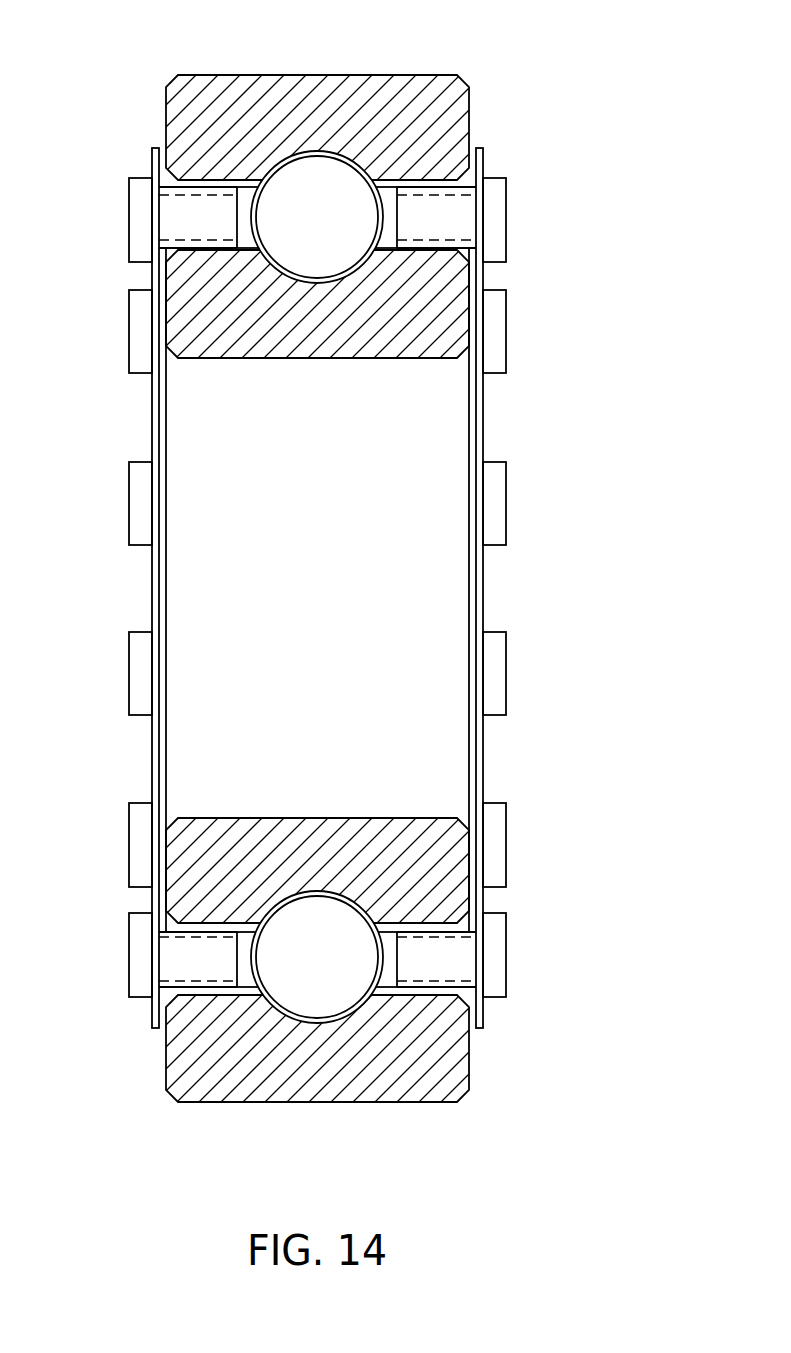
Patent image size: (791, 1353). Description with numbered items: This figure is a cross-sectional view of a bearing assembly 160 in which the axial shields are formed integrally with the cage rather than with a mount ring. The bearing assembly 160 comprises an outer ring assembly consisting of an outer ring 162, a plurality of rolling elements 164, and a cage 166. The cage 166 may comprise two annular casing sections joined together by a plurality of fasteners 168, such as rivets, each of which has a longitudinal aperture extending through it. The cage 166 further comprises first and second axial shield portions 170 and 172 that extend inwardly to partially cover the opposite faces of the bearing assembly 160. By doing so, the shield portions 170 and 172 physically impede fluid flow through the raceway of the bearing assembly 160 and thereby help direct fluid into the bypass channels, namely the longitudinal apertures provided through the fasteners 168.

The bearing assembly 160 is at (362, 551).
The outer ring 162 is at (314, 82).
The rolling elements 164 is at (342, 230).
The cage 166 is at (472, 212).
The fasteners 168 is at (137, 231).
The first axial shield portion 170 is at (484, 427).
The second axial shield portion 172 is at (151, 428).